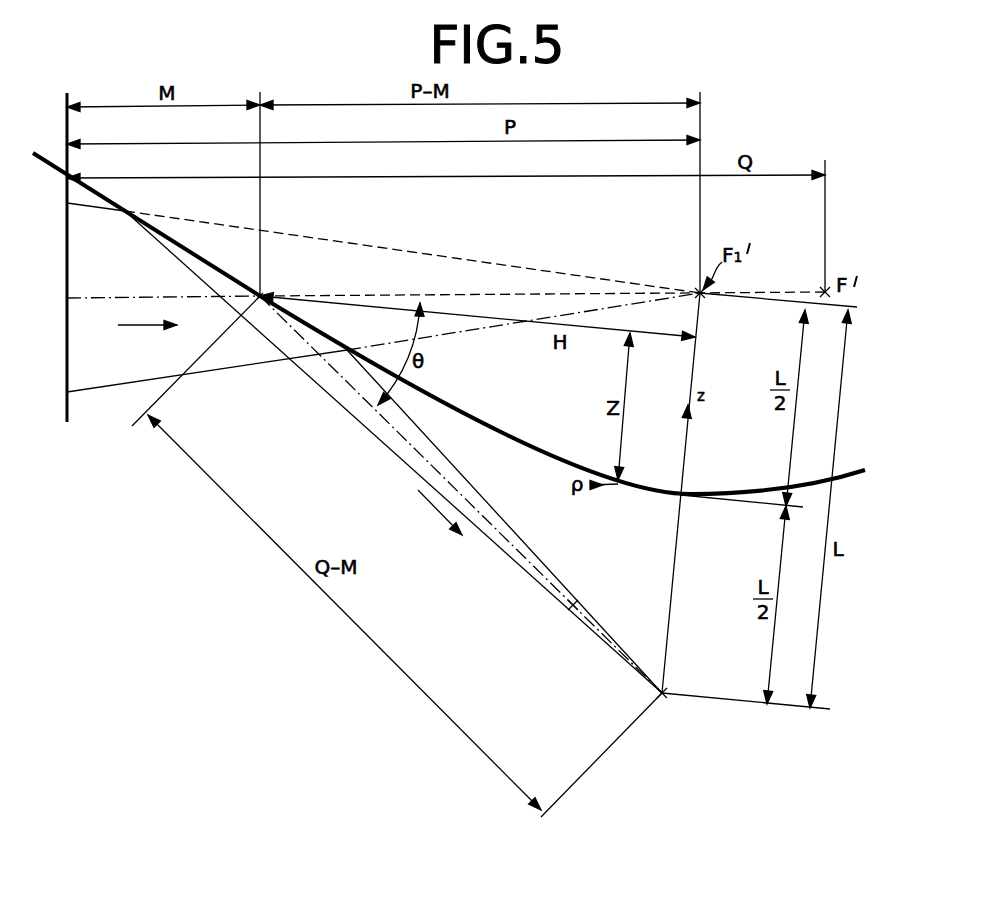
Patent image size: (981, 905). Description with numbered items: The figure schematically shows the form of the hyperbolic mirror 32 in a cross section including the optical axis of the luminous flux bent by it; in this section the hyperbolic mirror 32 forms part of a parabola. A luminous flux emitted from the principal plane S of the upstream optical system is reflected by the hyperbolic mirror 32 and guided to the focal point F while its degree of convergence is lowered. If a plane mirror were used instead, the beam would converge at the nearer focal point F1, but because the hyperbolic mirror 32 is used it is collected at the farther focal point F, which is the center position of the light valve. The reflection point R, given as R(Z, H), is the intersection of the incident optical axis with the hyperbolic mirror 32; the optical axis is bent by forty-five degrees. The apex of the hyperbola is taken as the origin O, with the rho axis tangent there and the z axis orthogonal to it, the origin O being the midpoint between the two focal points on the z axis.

The hyperbolic mirror 32 is at (510, 441).
The principal plane of the upstream optical system S is at (70, 405).
The origin O is at (742, 508).
The focal point F is at (669, 708).
The focal point F1 is at (573, 605).
The reflection point R is at (264, 292).